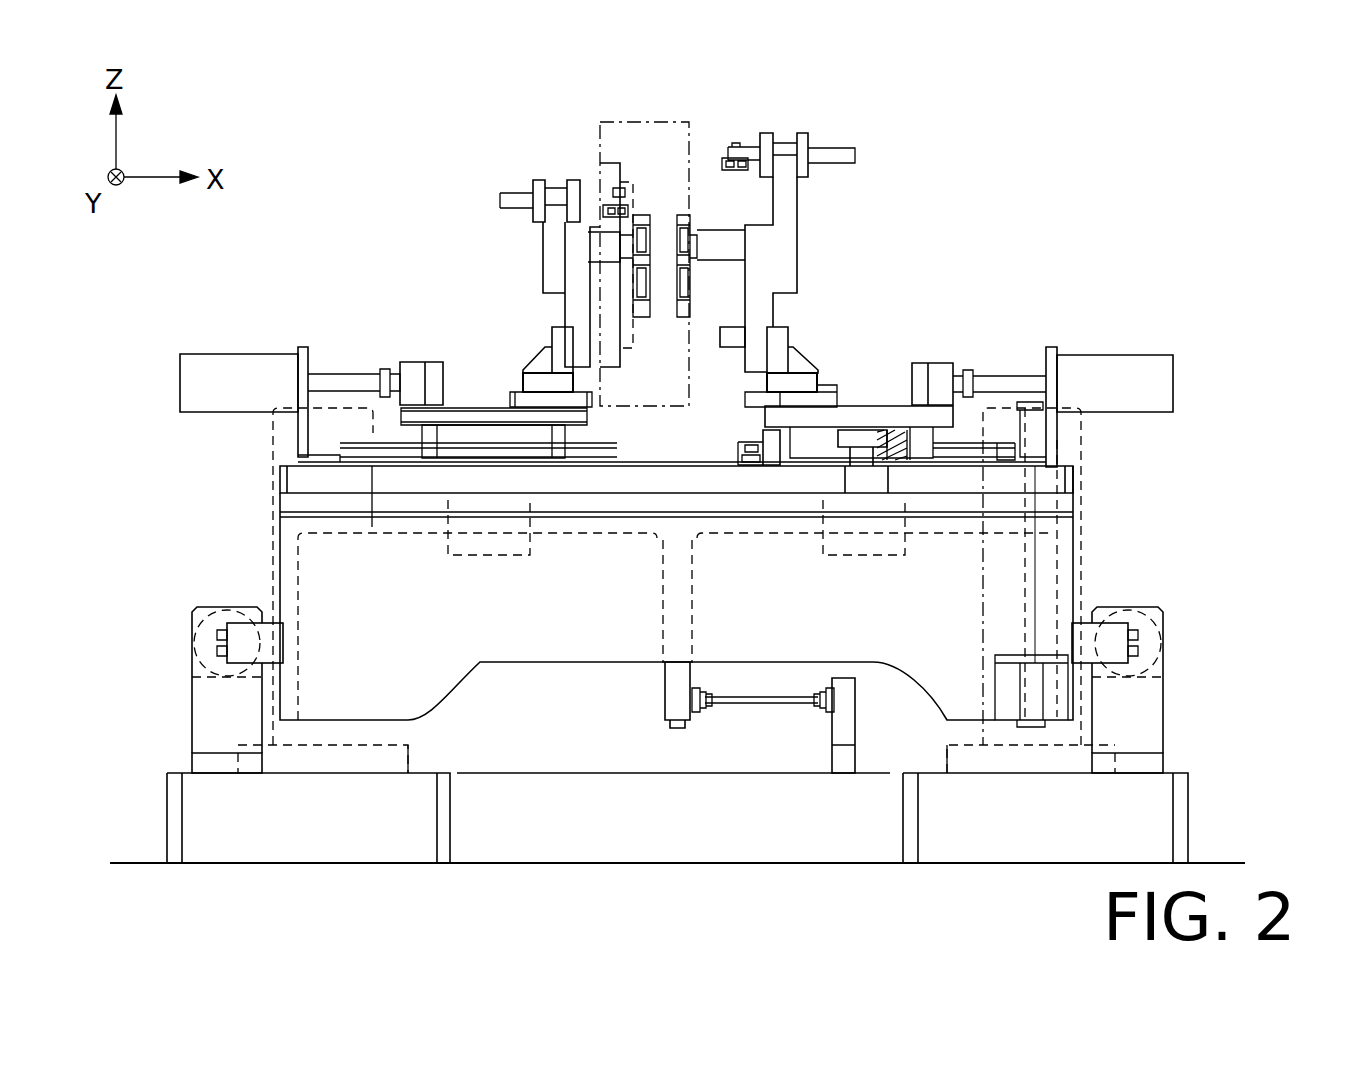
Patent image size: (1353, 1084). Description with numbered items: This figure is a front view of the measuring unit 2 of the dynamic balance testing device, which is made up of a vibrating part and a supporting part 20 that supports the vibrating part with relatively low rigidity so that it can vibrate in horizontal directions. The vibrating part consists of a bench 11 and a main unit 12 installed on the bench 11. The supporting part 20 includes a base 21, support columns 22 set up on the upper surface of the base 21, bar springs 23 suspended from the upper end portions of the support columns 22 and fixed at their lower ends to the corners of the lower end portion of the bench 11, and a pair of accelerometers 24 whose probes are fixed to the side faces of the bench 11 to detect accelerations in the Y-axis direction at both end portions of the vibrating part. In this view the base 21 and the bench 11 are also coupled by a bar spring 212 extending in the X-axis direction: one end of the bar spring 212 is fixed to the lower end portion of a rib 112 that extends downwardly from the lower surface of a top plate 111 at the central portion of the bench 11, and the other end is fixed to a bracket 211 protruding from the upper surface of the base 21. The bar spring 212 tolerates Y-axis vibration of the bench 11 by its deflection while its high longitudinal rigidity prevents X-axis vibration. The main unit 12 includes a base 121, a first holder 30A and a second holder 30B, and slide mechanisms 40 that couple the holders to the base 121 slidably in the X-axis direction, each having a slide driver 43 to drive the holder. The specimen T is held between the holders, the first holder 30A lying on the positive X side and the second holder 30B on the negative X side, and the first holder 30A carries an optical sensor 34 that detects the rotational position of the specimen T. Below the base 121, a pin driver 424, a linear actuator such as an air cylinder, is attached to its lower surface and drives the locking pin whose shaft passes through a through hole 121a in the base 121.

The measuring unit 2 is at (1146, 175).
The bench 11 is at (1075, 538).
The main unit 12 is at (592, 500).
The base 121 is at (272, 480).
The through hole 121a is at (838, 478).
The top plate 111 is at (750, 536).
The rib 112 is at (661, 578).
The supporting part 20 is at (1263, 502).
The base 21 is at (1190, 800).
The support column 22 is at (1083, 565).
The bar spring 23 is at (1038, 605).
The accelerometer 24 is at (1167, 658).
The bracket 211 is at (845, 745).
The bar spring 212 is at (781, 705).
The first holder 30A is at (884, 155).
The second holder 30B is at (519, 180).
The optical sensor 34 is at (727, 324).
The slide mechanism 40 is at (739, 457).
The pin driver 424 is at (864, 497).
The slide driver 43 is at (1176, 386).
The specimen T is at (650, 118).